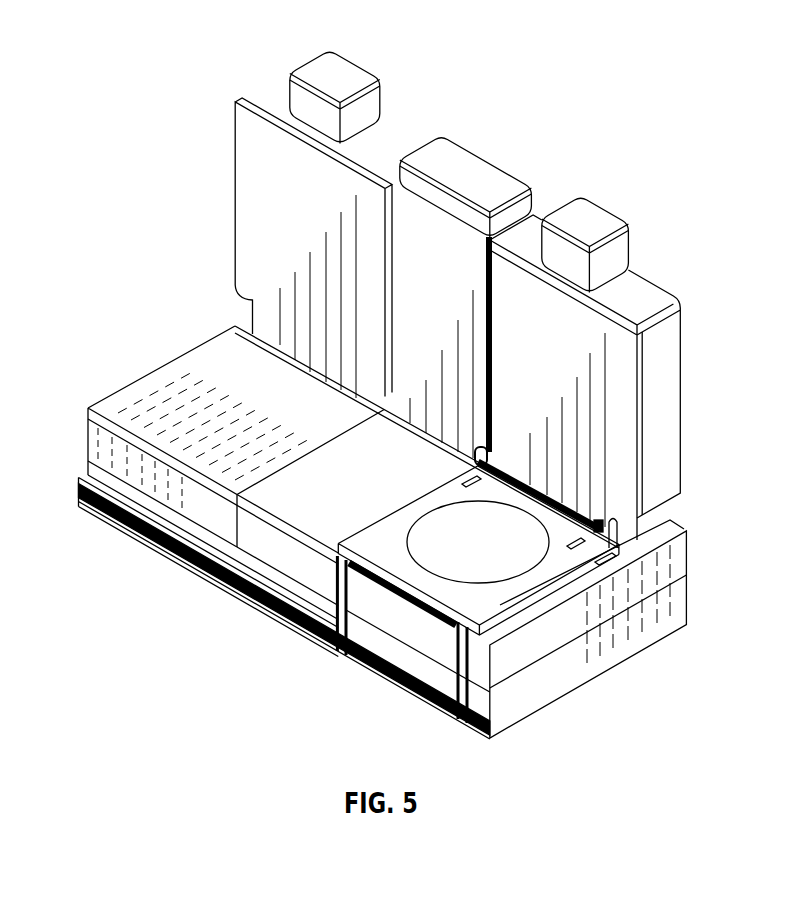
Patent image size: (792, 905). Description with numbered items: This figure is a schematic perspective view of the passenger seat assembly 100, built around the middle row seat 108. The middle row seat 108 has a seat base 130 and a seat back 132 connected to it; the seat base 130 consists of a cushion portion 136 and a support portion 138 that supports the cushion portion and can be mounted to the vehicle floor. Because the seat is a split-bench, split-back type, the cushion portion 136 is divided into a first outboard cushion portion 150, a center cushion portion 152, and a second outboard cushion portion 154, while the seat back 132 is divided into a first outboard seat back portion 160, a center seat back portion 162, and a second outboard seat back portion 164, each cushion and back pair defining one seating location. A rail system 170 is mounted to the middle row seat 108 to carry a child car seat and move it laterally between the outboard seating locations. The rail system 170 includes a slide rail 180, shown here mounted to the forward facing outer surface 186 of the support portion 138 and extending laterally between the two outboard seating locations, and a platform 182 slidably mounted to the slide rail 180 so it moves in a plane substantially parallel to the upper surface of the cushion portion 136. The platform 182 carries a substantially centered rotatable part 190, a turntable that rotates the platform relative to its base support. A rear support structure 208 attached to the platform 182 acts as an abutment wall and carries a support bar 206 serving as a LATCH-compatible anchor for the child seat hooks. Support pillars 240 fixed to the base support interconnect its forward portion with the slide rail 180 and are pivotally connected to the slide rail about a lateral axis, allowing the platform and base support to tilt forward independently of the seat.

The passenger seat assembly 100 is at (623, 364).
The middle row seat 108 is at (370, 86).
The seat base 130 is at (236, 427).
The seat back 132 is at (625, 468).
The cushion portion 136 is at (620, 634).
The support portion 138 is at (588, 644).
The first outboard cushion portion 150 is at (401, 648).
The center cushion portion 152 is at (280, 601).
The second outboard cushion portion 154 is at (213, 524).
The first outboard seat back portion 160 is at (620, 358).
The center seat back portion 162 is at (466, 284).
The second outboard seat back portion 164 is at (280, 248).
The rail system 170 is at (400, 715).
The slide rail 180 is at (284, 607).
The platform 182 is at (353, 527).
The forward facing outer surface 186 is at (277, 609).
The rotatable part 190 is at (469, 517).
The support bar 206 is at (427, 437).
The rear support structure 208 is at (539, 520).
The support pillars 240 is at (385, 661).